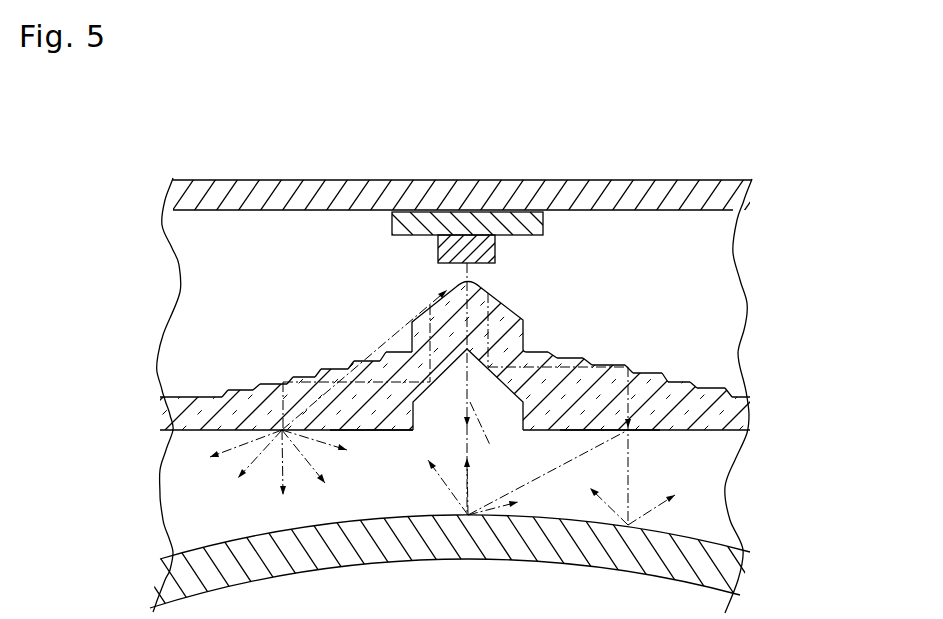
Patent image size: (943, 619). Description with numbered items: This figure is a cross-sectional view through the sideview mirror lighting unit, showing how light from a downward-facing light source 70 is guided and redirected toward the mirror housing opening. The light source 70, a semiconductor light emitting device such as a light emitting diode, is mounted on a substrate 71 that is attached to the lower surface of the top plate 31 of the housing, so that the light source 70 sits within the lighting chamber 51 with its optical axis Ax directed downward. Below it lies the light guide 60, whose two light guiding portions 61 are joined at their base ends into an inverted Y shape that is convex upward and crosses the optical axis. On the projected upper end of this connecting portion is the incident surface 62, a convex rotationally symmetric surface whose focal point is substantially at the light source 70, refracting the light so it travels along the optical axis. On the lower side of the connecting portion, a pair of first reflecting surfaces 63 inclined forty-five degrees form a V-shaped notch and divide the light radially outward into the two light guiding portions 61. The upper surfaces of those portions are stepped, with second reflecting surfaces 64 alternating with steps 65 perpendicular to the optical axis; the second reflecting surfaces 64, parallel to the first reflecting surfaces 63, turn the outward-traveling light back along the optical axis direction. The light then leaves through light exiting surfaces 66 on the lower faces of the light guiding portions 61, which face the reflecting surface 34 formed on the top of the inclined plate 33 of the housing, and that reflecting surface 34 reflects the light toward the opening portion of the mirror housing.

The top plate 31 is at (625, 198).
The inclined plate 33 is at (478, 548).
The reflecting surface 34 is at (253, 537).
The lighting chamber 51 is at (183, 260).
The light guide 60 is at (555, 278).
The light guiding portion 61 is at (372, 412).
The incident surface 62 is at (490, 297).
The first reflecting surface 63 is at (425, 385).
The second reflecting surface 64 is at (227, 388).
The step 65 is at (221, 391).
The light exiting surface 66 is at (347, 432).
The light source 70 is at (477, 250).
The substrate 71 is at (418, 227).